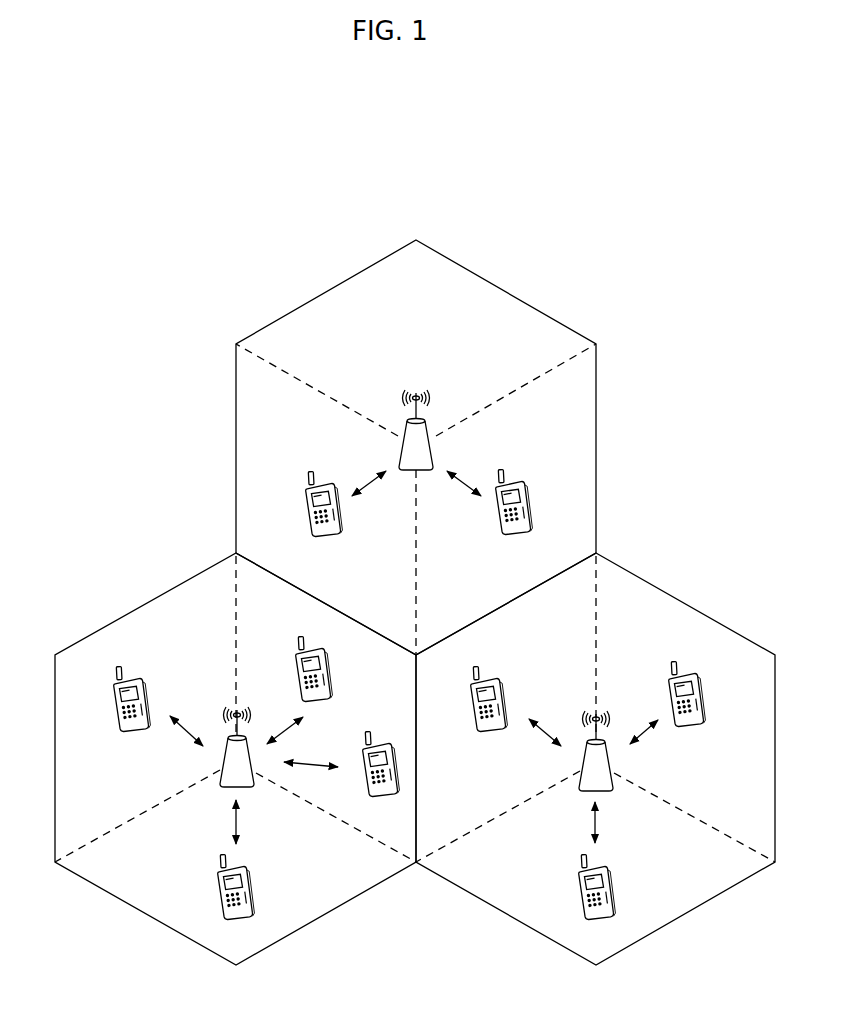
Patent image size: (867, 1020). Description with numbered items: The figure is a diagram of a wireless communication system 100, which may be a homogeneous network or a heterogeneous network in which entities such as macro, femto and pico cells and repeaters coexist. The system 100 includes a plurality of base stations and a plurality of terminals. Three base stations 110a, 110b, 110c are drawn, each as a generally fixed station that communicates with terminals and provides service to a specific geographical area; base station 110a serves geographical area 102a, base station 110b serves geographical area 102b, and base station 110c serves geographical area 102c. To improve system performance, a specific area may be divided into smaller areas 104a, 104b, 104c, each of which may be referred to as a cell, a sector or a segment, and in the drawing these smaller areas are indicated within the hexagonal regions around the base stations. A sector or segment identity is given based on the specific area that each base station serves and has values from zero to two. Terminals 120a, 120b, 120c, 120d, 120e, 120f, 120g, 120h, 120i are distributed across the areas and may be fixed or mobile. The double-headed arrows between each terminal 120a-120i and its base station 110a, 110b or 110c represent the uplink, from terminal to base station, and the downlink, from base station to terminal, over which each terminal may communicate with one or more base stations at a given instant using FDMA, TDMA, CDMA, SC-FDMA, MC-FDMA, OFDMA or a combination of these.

The wireless communication system 100 is at (659, 282).
The specific geographical area 102a is at (505, 289).
The specific geographical area 102b is at (147, 602).
The specific geographical area 102c is at (689, 602).
The smaller area 104a is at (434, 307).
The smaller area 104b is at (400, 589).
The smaller area 104c is at (489, 589).
The base station 110a is at (416, 391).
The base station 110b is at (254, 778).
The base station 110c is at (613, 781).
The terminal 120a is at (308, 494).
The terminal 120b is at (531, 510).
The terminal 120c is at (141, 684).
The terminal 120d is at (299, 653).
The terminal 120e is at (378, 744).
The terminal 120f is at (216, 889).
The terminal 120g is at (499, 686).
The terminal 120h is at (578, 890).
The terminal 120i is at (701, 730).